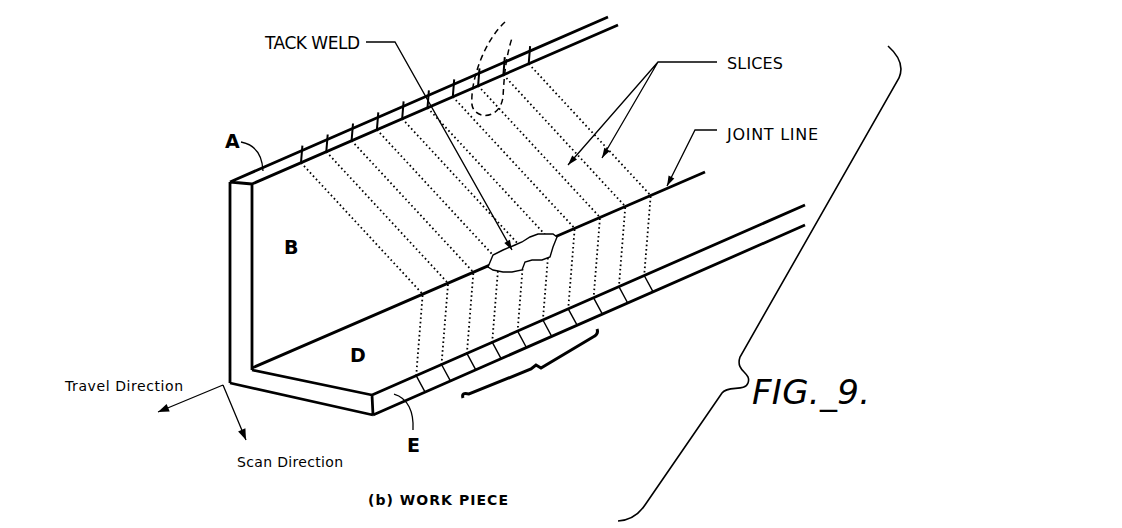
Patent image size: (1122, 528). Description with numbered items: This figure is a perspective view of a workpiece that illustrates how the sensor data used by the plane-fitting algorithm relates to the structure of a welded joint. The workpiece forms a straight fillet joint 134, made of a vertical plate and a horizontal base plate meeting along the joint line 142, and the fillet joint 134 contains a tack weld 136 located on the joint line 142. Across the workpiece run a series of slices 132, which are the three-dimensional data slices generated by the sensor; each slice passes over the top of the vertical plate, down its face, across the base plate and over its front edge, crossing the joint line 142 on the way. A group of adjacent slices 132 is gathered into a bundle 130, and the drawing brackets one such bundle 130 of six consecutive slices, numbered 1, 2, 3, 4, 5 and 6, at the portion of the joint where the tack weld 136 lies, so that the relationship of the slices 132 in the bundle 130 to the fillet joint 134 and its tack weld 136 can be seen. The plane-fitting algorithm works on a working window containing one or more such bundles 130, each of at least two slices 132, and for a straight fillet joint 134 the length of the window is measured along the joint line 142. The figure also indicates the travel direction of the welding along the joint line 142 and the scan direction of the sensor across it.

The bundle 130 is at (540, 370).
The slices 132 is at (517, 60).
The fillet joint 134 is at (203, 353).
The tack weld 136 is at (546, 248).
The joint line 142 is at (690, 180).
The slice 1 is at (516, 203).
The slice 2 is at (492, 214).
The slice 3 is at (465, 225).
The slice 4 is at (440, 236).
The slice 5 is at (415, 247).
The slice 6 is at (389, 258).